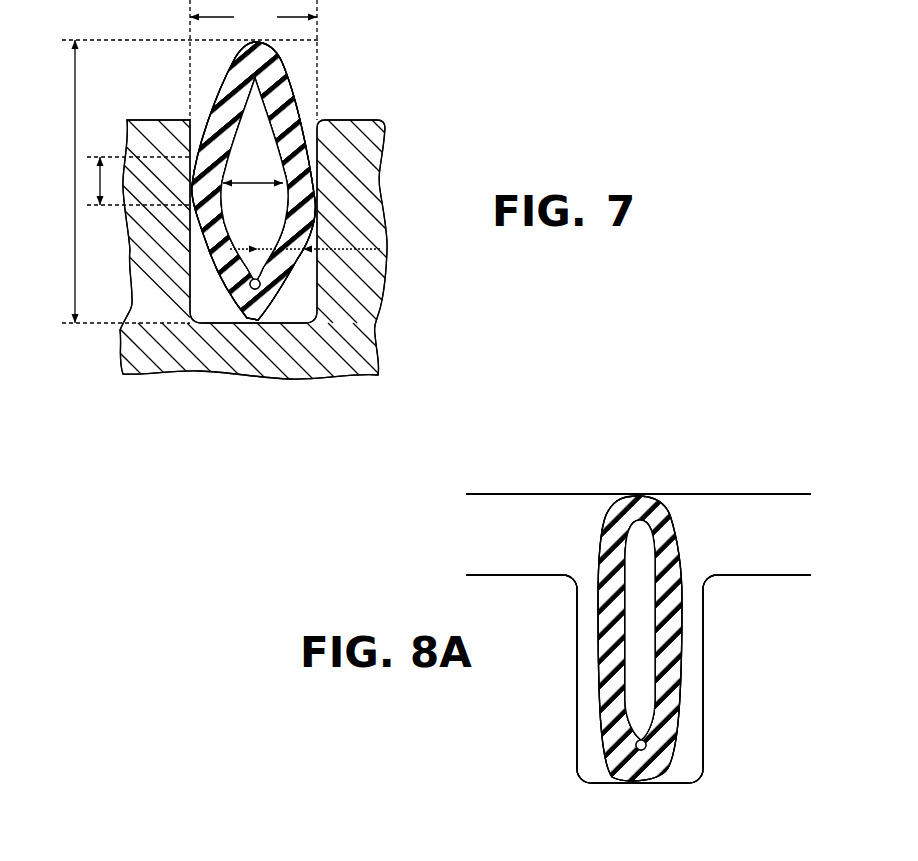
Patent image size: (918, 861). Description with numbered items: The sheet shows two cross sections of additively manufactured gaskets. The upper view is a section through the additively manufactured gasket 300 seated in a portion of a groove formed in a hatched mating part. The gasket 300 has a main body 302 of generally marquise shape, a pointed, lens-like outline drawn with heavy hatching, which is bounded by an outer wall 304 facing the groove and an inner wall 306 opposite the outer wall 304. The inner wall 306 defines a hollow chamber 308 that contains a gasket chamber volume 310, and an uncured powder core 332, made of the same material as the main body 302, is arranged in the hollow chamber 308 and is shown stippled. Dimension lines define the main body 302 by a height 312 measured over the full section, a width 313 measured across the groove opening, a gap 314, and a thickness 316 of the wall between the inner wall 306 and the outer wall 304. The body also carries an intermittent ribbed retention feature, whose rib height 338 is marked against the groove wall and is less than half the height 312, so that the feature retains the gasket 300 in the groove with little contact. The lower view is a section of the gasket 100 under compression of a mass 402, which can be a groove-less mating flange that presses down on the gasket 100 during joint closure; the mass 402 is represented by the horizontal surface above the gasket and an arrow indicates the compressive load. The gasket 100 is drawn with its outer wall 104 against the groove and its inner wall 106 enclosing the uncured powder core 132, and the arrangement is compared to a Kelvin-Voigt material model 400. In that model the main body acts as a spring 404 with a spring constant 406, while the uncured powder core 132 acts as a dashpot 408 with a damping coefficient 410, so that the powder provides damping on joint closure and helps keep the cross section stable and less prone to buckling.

In FIG. 7, the additively manufactured gasket 300 is at (297, 63).
In FIG. 7, the main body 302 is at (273, 102).
In FIG. 7, the outer wall 304 is at (190, 292).
In FIG. 7, the inner wall 306 is at (268, 295).
In FIG. 7, the hollow chamber 308 is at (240, 168).
In FIG. 7, the gasket chamber volume 310 is at (264, 231).
In FIG. 7, the height 312 is at (75, 182).
In FIG. 7, the width 313 is at (253, 60).
In FIG. 7, the gap 314 is at (296, 126).
In FIG. 7, the thickness 316 is at (340, 250).
In FIG. 7, the uncured powder core 332 is at (245, 94).
In FIG. 7, the rib height 338 is at (105, 180).
In FIG. 8A, the gasket 100 is at (688, 517).
In FIG. 8A, the outer wall 104 is at (680, 718).
In FIG. 8A, the inner wall 106 is at (641, 750).
In FIG. 8A, the uncured powder core 132 is at (637, 644).
In FIG. 8A, the Kelvin-Voigt material model 400 is at (598, 514).
In FIG. 8A, the mass 402 is at (655, 488).
In FIG. 8A, the spring 404 is at (607, 640).
In FIG. 8A, the spring constant 406 is at (607, 708).
In FIG. 8A, the dashpot 408 is at (640, 537).
In FIG. 8A, the damping coefficient 410 is at (640, 580).